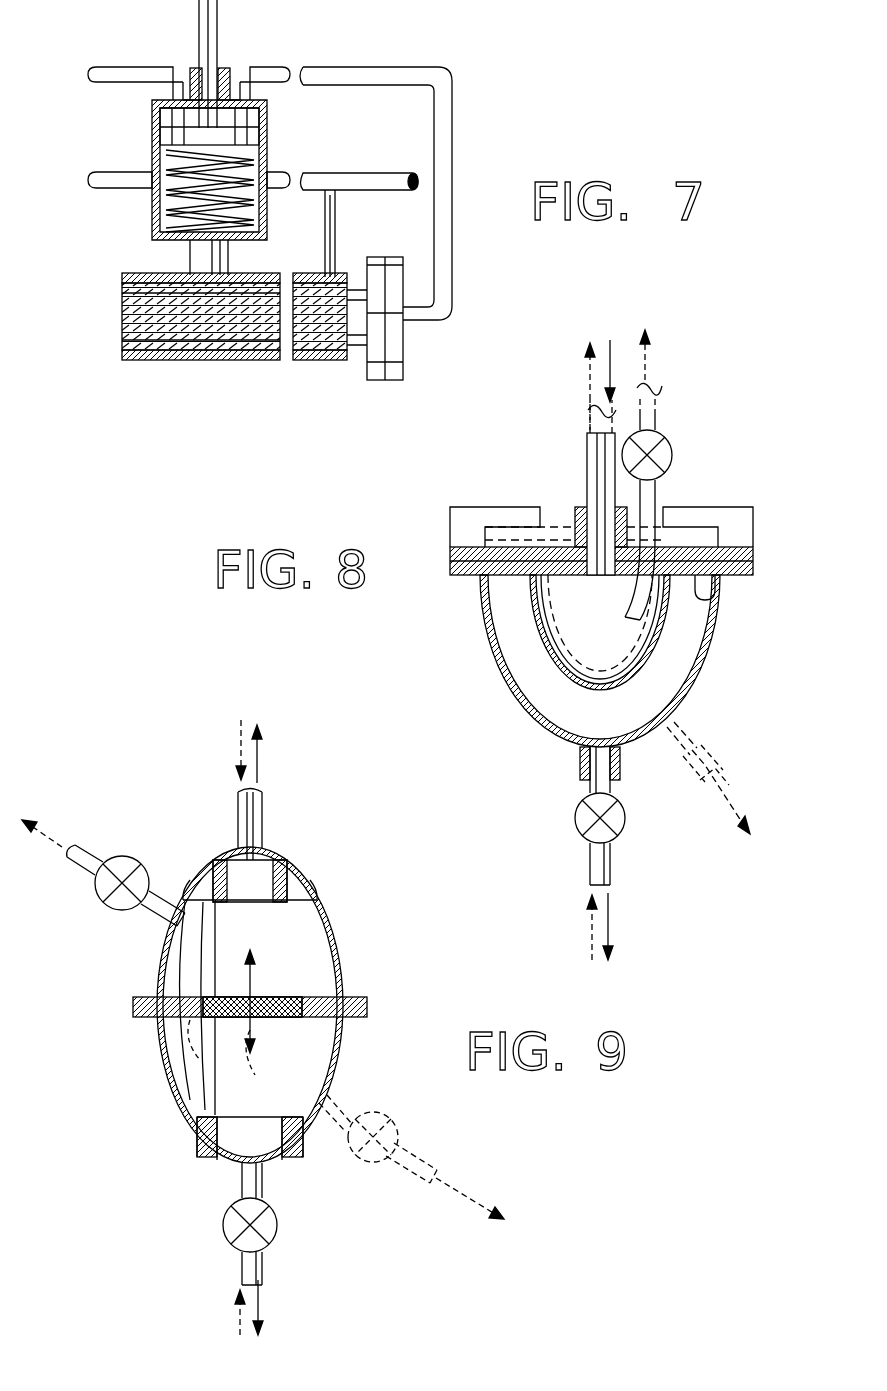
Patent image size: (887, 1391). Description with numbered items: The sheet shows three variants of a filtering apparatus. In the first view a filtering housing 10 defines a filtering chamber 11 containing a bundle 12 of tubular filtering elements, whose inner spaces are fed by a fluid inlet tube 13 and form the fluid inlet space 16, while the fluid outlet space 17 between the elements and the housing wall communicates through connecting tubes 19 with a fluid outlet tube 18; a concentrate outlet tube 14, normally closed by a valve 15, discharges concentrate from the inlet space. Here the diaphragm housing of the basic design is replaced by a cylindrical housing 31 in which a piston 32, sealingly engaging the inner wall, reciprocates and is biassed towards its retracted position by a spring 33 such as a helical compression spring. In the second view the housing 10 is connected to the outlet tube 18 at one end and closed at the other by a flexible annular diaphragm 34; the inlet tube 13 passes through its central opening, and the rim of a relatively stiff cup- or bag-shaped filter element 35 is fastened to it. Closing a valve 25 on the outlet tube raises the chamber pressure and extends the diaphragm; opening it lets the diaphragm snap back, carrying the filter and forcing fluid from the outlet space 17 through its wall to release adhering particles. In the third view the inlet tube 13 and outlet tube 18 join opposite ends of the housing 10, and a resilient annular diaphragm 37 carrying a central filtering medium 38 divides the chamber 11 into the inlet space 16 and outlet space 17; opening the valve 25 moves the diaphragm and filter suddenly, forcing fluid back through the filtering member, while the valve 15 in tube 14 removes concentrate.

In FIG. 7, the filtering housing 10 is at (165, 362).
In FIG. 8, the filtering housing 10 is at (490, 633).
In FIG. 9, the filtering housing 10 is at (340, 955).
In FIG. 8, the filtering chamber 11 is at (540, 700).
In FIG. 9, the filtering chamber 11 is at (315, 1043).
In FIG. 7, the bundle of tubular filtering elements 12 is at (122, 332).
In FIG. 7, the fluid inlet tube 13 is at (352, 72).
In FIG. 8, the fluid inlet tube 13 is at (590, 470).
In FIG. 9, the fluid inlet tube 13 is at (265, 812).
In FIG. 8, the concentrate outlet tube 14 is at (660, 492).
In FIG. 9, the concentrate outlet tube 14 is at (82, 843).
In FIG. 8, the valve 15 is at (672, 452).
In FIG. 9, the valve 15 is at (135, 862).
In FIG. 8, the fluid inlet space 16 is at (608, 655).
In FIG. 9, the fluid inlet space 16 is at (185, 957).
In FIG. 7, the fluid outlet space 17 is at (232, 360).
In FIG. 9, the fluid outlet space 17 is at (195, 1100).
In FIG. 7, the fluid outlet tube 18 is at (388, 176).
In FIG. 8, the fluid outlet tube 18 is at (613, 862).
In FIG. 9, the fluid outlet tube 18 is at (262, 1270).
In FIG. 7, the connecting tubes 19 is at (335, 222).
In FIG. 8, the valve 25 is at (582, 818).
In FIG. 9, the valve 25 is at (232, 1232).
In FIG. 7, the cylindrical housing 31 is at (152, 133).
In FIG. 7, the piston 32 is at (262, 132).
In FIG. 7, the spring 33 is at (152, 205).
In FIG. 8, the flexible annular diaphragm 34 is at (705, 592).
In FIG. 8, the cup- or bag-shaped filter element 35 is at (673, 650).
In FIG. 9, the flexible resilient annular diaphragm 37 is at (190, 1022).
In FIG. 9, the filtering medium 38 is at (270, 998).